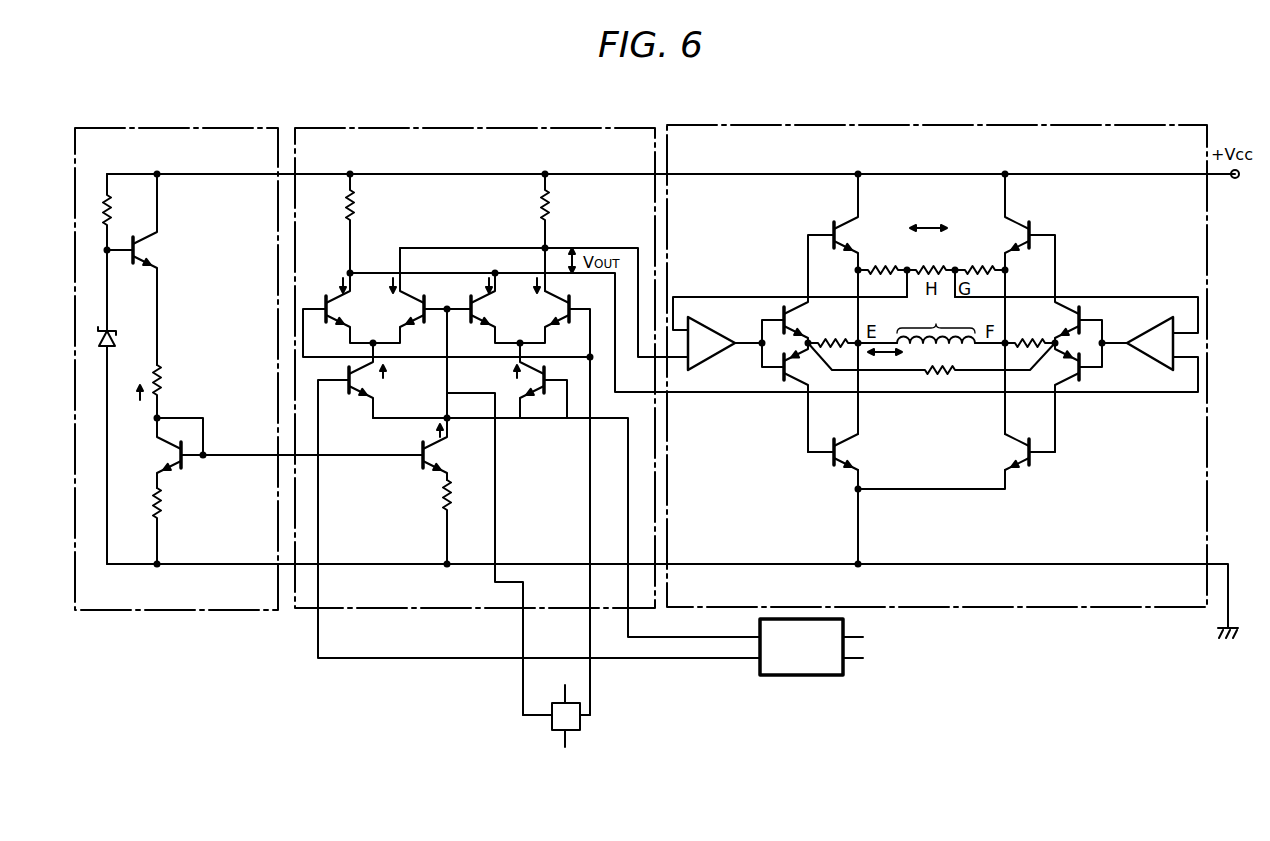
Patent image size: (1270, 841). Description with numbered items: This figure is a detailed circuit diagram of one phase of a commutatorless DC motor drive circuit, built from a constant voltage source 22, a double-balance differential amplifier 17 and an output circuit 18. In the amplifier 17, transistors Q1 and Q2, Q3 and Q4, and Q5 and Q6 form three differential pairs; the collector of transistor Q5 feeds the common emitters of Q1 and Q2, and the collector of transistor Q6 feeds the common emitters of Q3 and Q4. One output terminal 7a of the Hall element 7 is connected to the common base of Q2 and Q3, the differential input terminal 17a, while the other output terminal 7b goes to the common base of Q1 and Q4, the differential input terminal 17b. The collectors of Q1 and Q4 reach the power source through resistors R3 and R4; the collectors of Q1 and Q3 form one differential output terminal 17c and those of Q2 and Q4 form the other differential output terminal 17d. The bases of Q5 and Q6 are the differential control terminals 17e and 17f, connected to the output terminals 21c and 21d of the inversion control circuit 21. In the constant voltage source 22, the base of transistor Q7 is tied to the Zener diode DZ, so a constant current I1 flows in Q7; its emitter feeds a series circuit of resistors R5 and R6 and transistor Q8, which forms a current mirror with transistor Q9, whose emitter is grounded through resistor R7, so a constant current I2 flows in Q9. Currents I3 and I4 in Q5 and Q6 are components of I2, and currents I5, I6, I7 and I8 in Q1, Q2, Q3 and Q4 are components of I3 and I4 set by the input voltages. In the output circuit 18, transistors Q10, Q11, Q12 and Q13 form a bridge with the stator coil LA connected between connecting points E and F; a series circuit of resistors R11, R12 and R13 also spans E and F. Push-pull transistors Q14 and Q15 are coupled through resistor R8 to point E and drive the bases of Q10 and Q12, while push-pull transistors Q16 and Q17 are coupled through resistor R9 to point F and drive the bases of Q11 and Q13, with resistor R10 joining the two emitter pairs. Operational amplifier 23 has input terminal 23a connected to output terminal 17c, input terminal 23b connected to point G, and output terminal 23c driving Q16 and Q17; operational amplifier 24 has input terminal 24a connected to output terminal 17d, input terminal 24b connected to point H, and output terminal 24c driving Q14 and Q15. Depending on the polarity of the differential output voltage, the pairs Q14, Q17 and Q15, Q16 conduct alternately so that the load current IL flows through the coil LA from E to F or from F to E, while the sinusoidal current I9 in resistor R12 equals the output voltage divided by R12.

The constant voltage source 22 is at (219, 128).
The double-balance differential amplifier 17 is at (389, 128).
The output circuit 18 is at (805, 125).
The differential input terminal 17a is at (525, 608).
The differential input terminal 17b is at (592, 608).
The differential output terminal 17c is at (653, 393).
The differential output terminal 17d is at (657, 358).
The differential control terminal 17e is at (310, 610).
The differential control terminal 17f is at (628, 608).
The Hall element 7 is at (566, 716).
The output terminal of Hall element 7a is at (552, 715).
The output terminal of Hall element 7b is at (580, 715).
The inversion control circuit 21 is at (812, 675).
The output terminal of inversion control circuit 21c is at (760, 640).
The output terminal of inversion control circuit 21d is at (758, 662).
The operational amplifier 24 is at (711, 343).
The input terminal of operational amplifier 24 24a is at (690, 372).
The input terminal of operational amplifier 24 24b is at (673, 300).
The output terminal of operational amplifier 24 24c is at (745, 346).
The operational amplifier 23 is at (1150, 343).
The input terminal of operational amplifier 23 23a is at (1176, 360).
The input terminal of operational amplifier 23 23b is at (1175, 317).
The output terminal of operational amplifier 23 23c is at (1118, 346).
The transistor Q1 is at (443, 315).
The transistor Q2 is at (422, 295).
The transistor Q3 is at (490, 313).
The transistor Q4 is at (548, 322).
The transistor Q5 is at (353, 384).
The transistor Q6 is at (543, 384).
The transistor Q7 is at (146, 269).
The transistor Q8 is at (161, 453).
The transistor Q9 is at (449, 449).
The transistor Q10 is at (850, 235).
The transistor Q11 is at (1030, 235).
The transistor Q12 is at (846, 452).
The transistor Q13 is at (1014, 453).
The transistor Q14 is at (809, 310).
The transistor Q15 is at (796, 383).
The transistor Q16 is at (1073, 328).
The transistor Q17 is at (1052, 378).
The resistor R3 is at (362, 223).
The resistor R4 is at (557, 232).
The resistor R5 is at (170, 391).
The resistor R6 is at (170, 526).
The resistor R7 is at (460, 522).
The resistor R8 is at (833, 330).
The resistor R9 is at (1030, 330).
The resistor R10 is at (929, 373).
The resistor R11 is at (882, 258).
The resistor R12 is at (931, 257).
The resistor R13 is at (980, 257).
The Zener diode DZ is at (123, 337).
The stator coil LA is at (936, 322).
The constant current I1 is at (130, 400).
The constant current I2 is at (433, 431).
The current I3 is at (390, 375).
The current I4 is at (506, 375).
The current I5 is at (332, 274).
The current I6 is at (380, 288).
The current I7 is at (479, 288).
The current I8 is at (526, 288).
The current I9 is at (928, 215).
The current IL is at (885, 362).